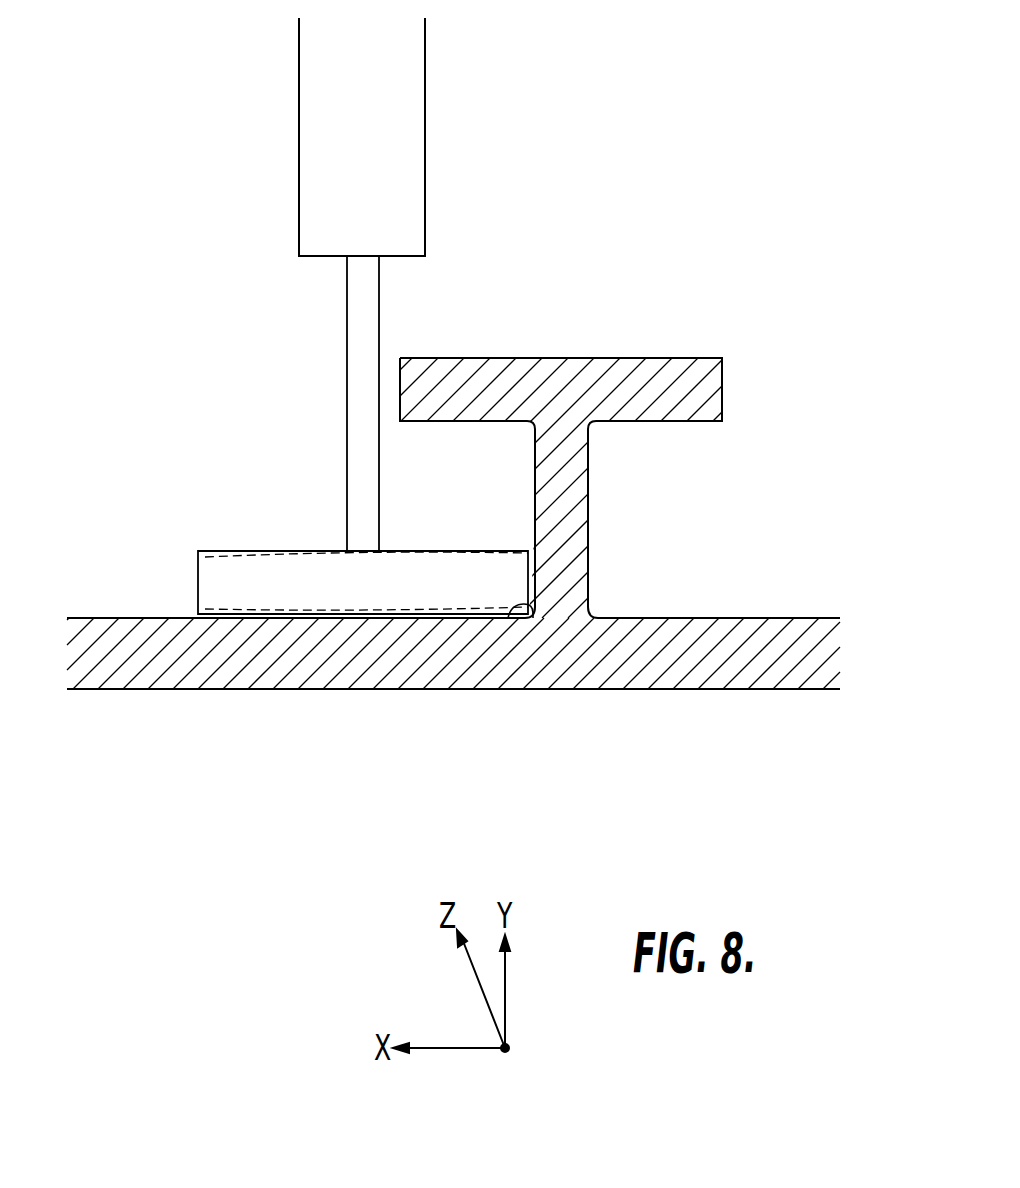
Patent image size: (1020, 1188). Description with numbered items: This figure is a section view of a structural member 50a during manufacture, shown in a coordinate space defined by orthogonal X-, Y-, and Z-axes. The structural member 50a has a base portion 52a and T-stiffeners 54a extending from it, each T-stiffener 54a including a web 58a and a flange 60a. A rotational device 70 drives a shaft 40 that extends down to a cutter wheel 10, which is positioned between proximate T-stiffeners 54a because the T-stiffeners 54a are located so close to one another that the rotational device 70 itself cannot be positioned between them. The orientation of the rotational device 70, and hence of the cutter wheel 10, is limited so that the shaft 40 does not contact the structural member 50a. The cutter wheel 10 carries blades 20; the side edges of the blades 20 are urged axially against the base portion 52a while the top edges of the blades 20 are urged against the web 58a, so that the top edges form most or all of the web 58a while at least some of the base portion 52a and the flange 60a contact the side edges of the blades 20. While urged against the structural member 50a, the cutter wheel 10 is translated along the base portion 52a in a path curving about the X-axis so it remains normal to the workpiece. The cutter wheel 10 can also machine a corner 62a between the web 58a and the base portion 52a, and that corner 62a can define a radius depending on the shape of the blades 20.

The cutter wheel 10 is at (205, 551).
The blades 20 is at (218, 585).
The shaft 40 is at (379, 310).
The rotational device 70 is at (299, 198).
The structural member 50a is at (782, 689).
The base portion 52a is at (97, 690).
The T-stiffeners 54a is at (578, 358).
The web 58a is at (588, 516).
The flange 60a is at (723, 392).
The corner 62a is at (507, 605).